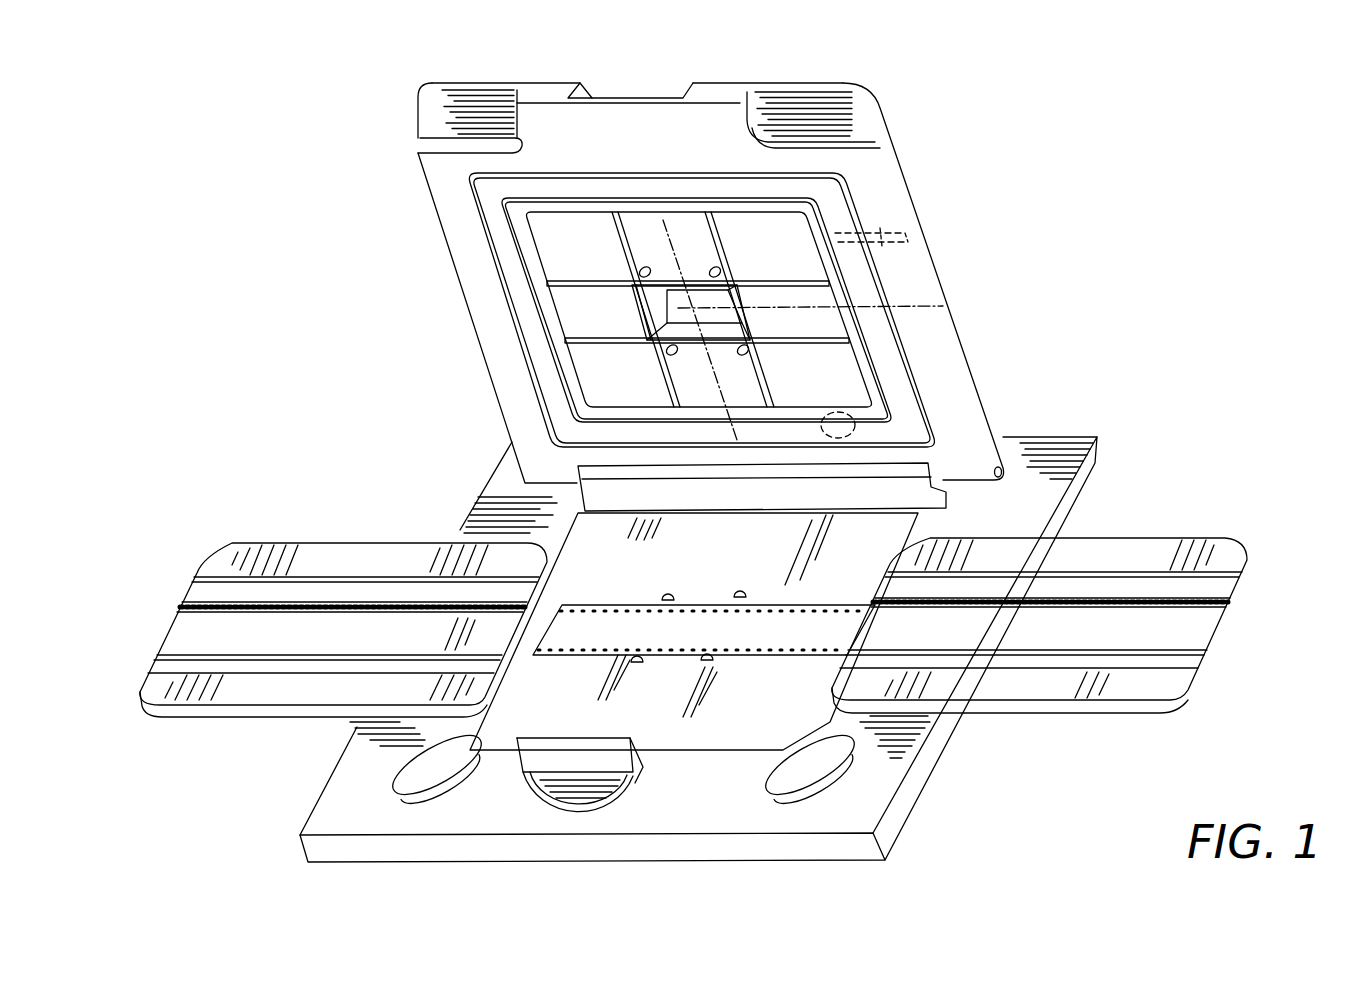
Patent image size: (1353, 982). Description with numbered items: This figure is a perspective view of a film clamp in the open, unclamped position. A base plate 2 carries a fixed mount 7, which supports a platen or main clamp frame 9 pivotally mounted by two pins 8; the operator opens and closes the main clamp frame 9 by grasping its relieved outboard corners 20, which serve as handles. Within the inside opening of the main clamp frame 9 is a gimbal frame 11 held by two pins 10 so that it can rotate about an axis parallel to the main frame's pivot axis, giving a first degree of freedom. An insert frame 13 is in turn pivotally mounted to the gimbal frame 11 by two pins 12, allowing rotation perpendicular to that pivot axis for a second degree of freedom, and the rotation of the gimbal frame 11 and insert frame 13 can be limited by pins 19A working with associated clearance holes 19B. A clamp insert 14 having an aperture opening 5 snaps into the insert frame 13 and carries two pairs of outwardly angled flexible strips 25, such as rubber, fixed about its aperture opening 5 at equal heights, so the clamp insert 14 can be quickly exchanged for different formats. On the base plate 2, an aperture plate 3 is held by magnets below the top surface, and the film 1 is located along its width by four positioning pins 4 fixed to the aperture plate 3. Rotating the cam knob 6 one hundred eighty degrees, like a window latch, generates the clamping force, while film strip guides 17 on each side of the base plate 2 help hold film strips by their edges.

The film 1 is at (770, 641).
The base plate 2 is at (731, 815).
The aperture plate 3 is at (740, 728).
The positioning pins 4 is at (668, 592).
The aperture opening 5 is at (672, 297).
The cam knob 6 is at (583, 783).
The fixed mount 7 is at (912, 497).
The pins 8 is at (1005, 455).
The main clamp frame 9 is at (725, 93).
The pins 10 is at (931, 305).
The gimbal frame 11 is at (486, 211).
The pins 12 is at (663, 220).
The insert frame 13 is at (822, 241).
The clamp insert 14 is at (592, 358).
The film strip guides 17 is at (1067, 693).
The pins 19A is at (888, 238).
The clearance holes 19B is at (882, 232).
The relieved outboard corners 20 is at (438, 110).
The flexible strips 25 is at (690, 282).